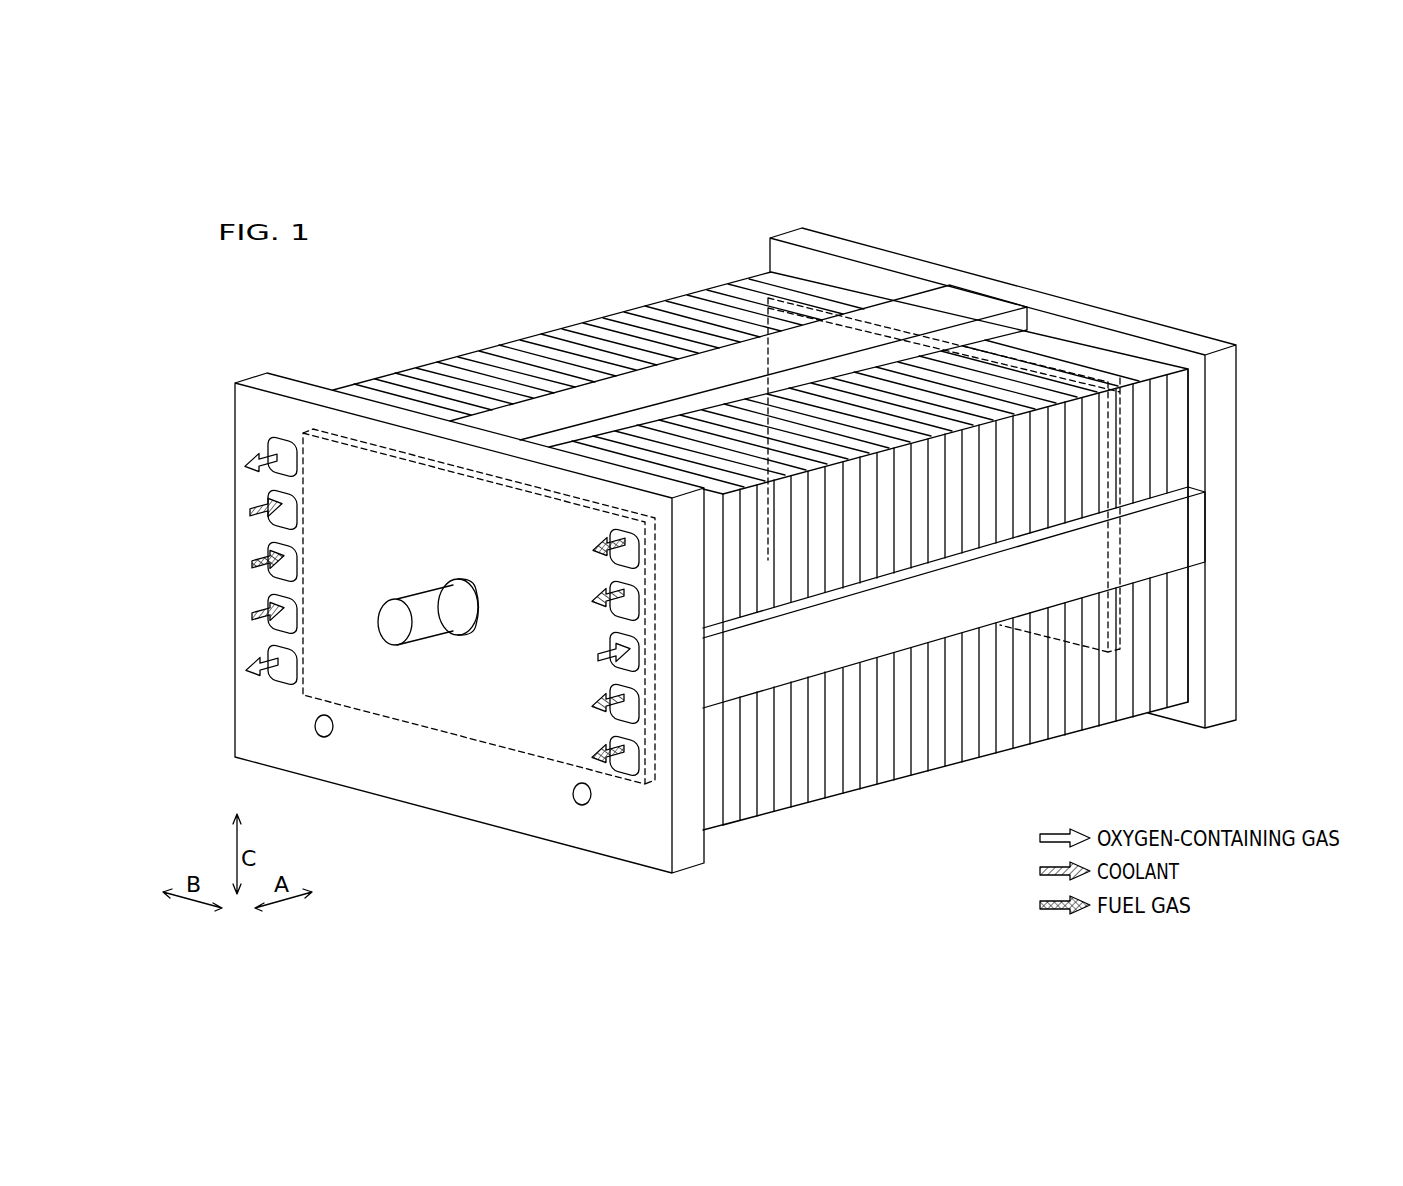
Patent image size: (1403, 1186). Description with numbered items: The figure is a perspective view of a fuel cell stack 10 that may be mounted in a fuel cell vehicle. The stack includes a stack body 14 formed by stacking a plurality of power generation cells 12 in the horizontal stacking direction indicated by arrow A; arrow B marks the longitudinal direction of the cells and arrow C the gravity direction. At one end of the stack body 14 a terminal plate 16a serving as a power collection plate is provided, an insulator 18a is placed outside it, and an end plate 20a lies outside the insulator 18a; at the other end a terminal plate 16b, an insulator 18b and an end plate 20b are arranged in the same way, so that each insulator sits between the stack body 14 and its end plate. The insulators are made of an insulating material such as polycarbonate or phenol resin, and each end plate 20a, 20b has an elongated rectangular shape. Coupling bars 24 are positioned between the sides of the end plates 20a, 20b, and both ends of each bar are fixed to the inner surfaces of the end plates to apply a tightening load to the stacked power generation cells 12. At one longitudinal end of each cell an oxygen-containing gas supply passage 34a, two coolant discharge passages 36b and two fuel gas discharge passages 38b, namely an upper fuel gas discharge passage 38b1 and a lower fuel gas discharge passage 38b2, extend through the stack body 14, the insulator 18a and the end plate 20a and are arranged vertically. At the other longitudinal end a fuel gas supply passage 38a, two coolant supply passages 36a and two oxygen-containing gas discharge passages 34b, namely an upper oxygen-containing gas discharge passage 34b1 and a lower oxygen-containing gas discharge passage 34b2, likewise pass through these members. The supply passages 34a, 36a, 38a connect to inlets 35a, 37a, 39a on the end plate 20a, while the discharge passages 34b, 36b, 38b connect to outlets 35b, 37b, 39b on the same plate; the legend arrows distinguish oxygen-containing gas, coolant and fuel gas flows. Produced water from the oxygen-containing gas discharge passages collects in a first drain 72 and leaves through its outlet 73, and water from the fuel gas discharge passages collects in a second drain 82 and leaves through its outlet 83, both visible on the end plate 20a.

The fuel cell stack 10 is at (355, 275).
The power generation cell 12 is at (562, 287).
The stack body 14 is at (760, 540).
The terminal plate 16a is at (525, 773).
The terminal plate 16b is at (1124, 455).
The insulator 18a is at (720, 818).
The insulator 18b is at (1187, 655).
The end plate 20a is at (445, 796).
The end plate 20b is at (1248, 383).
The coupling bar 24 is at (977, 305).
The oxygen-containing gas supply passage 34a is at (647, 645).
The oxygen-containing gas discharge passage 34b is at (310, 564).
The upper oxygen-containing gas discharge passage 34b1 is at (290, 458).
The lower oxygen-containing gas discharge passage 34b2 is at (290, 673).
The inlet 35a is at (632, 663).
The outlet 35b is at (310, 564).
The coolant supply passage 36a is at (337, 575).
The coolant discharge passage 36b is at (561, 647).
The inlet 37a is at (292, 510).
The outlet 37b is at (612, 586).
The fuel gas supply passage 38a is at (281, 561).
The fuel gas discharge passage 38b is at (560, 601).
The upper fuel gas discharge passage 38b1 is at (608, 531).
The lower fuel gas discharge passage 38b2 is at (556, 748).
The inlet 39a is at (273, 546).
The outlet 39b is at (560, 601).
The first drain 72 is at (320, 772).
The outlet 73 is at (322, 738).
The second drain 82 is at (582, 841).
The outlet 83 is at (583, 806).